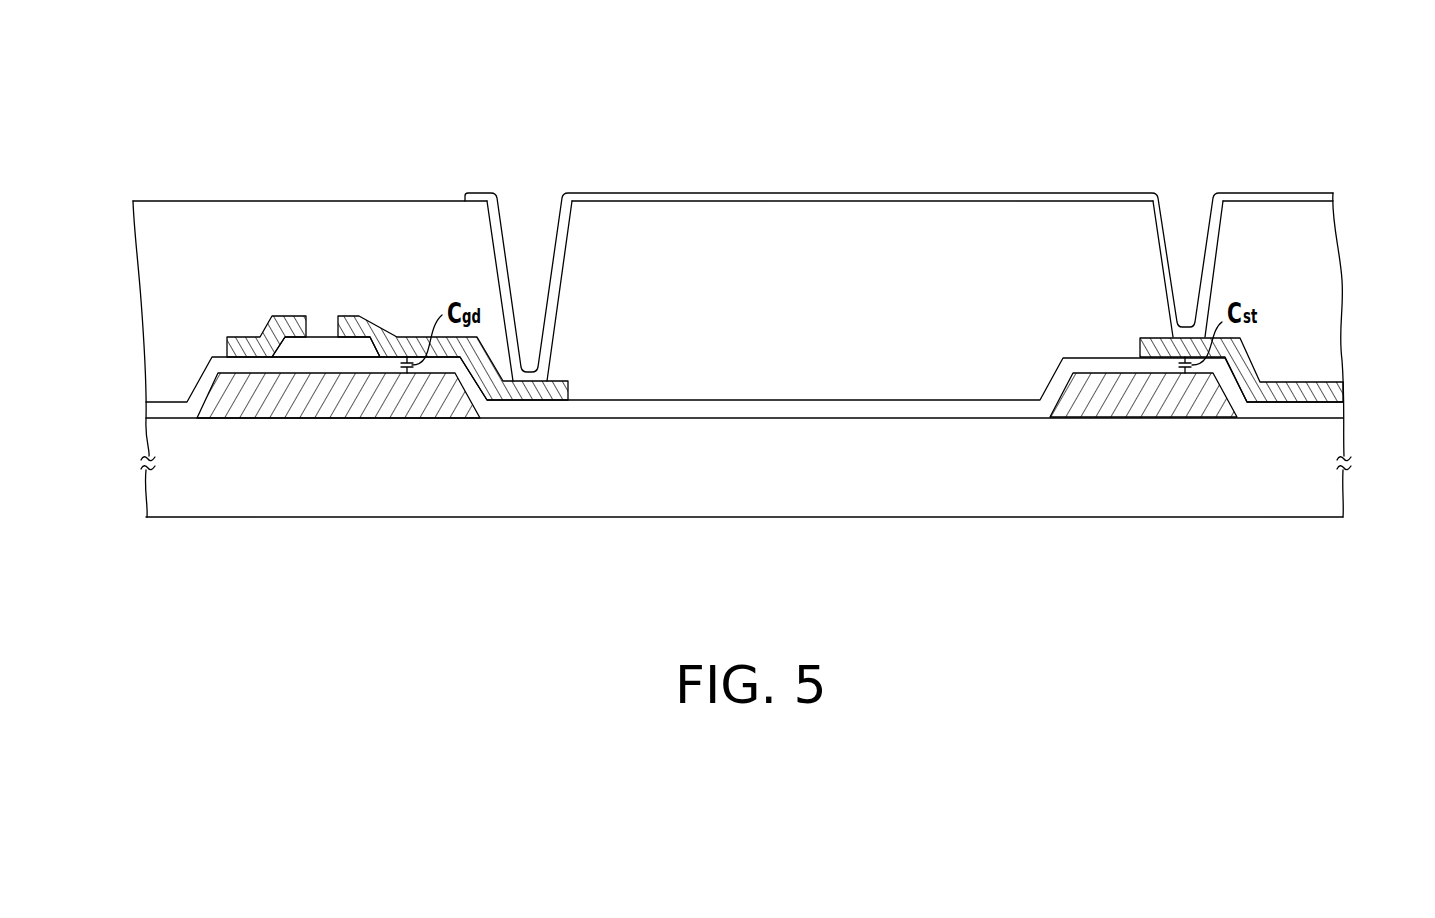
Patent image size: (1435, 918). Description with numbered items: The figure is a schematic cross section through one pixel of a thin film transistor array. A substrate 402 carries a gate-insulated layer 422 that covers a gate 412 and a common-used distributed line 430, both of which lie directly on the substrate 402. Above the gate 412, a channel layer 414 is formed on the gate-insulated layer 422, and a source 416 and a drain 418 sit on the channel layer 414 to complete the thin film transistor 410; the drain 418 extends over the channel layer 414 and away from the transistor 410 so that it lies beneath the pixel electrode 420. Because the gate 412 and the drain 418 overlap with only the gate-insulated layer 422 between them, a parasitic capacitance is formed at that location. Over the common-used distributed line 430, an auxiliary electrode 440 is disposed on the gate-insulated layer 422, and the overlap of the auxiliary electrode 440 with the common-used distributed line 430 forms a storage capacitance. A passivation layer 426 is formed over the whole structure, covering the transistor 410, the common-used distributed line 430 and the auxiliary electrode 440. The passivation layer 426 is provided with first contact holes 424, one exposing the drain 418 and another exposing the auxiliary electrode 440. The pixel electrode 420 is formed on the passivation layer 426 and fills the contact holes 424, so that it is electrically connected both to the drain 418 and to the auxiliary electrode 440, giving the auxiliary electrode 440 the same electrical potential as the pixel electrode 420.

The substrate 402 is at (1325, 496).
The thin film transistor 410 is at (382, 489).
The gate 412 is at (398, 405).
The channel layer 414 is at (323, 350).
The source 416 is at (245, 348).
The drain 418 is at (505, 393).
The pixel electrode 420 is at (477, 193).
The gate-insulated layer 422 is at (1327, 411).
The first contact hole 424 is at (560, 282).
The passivation layer 426 is at (1320, 258).
The common-used distributed line 430 is at (1180, 403).
The auxiliary electrode 440 is at (1330, 393).